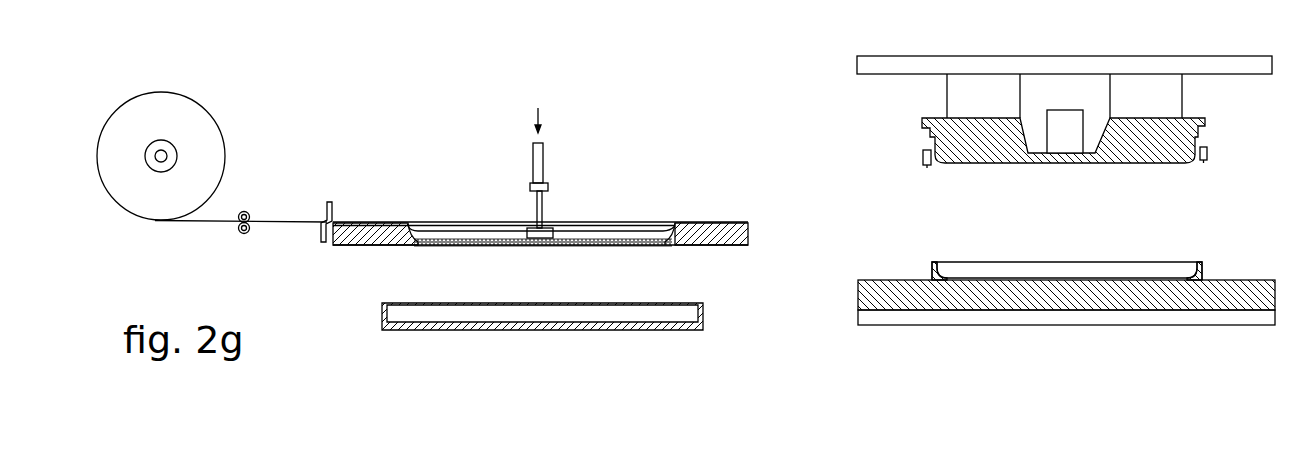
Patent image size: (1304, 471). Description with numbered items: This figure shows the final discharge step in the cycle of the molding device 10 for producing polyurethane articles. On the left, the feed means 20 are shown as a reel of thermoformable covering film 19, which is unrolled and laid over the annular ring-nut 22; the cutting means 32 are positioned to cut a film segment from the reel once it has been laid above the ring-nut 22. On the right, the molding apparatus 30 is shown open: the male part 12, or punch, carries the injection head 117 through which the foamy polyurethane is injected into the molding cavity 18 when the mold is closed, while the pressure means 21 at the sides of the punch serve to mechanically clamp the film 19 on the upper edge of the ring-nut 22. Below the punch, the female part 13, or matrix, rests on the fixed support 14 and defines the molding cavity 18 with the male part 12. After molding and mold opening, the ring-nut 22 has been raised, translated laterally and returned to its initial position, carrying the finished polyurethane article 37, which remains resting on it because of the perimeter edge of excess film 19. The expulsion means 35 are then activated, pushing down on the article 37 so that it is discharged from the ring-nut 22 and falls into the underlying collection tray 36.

The molding device 10 is at (647, 108).
The male part 12 is at (1138, 155).
The female part 13 is at (867, 298).
The fixed support 14 is at (1010, 317).
The molding cavity 18 is at (1047, 270).
The thermoformable covering film 19 is at (287, 222).
The feed means 20 is at (190, 115).
The pressure means 21 is at (922, 153).
The annular ring-nut 22 is at (702, 223).
The molding apparatus 30 is at (838, 142).
The cutting means 32 is at (350, 178).
The expulsion means 35 is at (537, 208).
The collection tray 36 is at (382, 317).
The polyurethane article 37 is at (588, 248).
The injection head 117 is at (1055, 147).